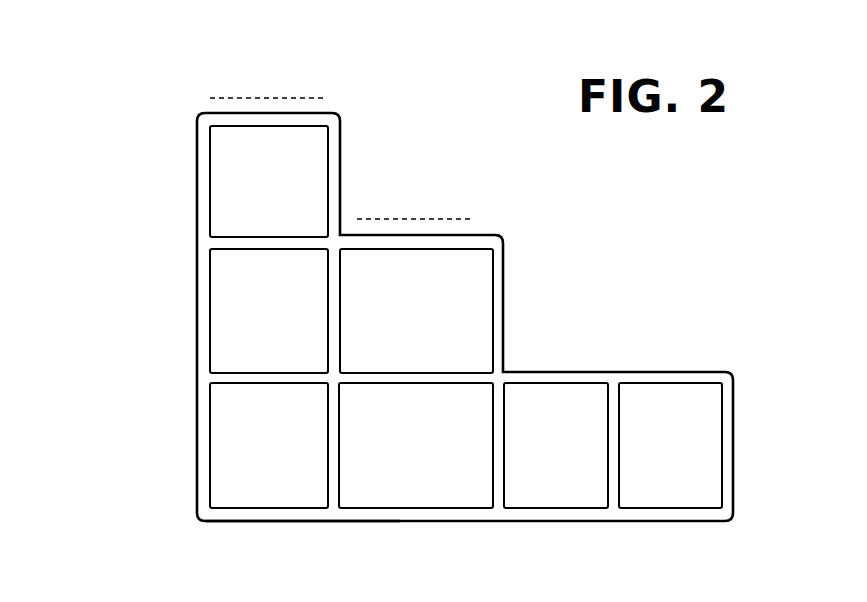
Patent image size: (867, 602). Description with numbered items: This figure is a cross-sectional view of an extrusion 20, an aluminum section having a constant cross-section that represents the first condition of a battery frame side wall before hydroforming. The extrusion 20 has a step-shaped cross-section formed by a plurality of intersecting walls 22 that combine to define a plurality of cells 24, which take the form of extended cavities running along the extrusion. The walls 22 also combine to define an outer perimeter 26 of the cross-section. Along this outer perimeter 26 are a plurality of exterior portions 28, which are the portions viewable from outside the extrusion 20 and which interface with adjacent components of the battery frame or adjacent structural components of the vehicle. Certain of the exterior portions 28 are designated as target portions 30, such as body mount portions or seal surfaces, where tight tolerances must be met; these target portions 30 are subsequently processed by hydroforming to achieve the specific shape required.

The extrusion 20 is at (133, 267).
The intersecting walls 22 is at (464, 354).
The cells 24 is at (258, 193).
The outer perimeter 26 is at (188, 531).
The exterior portions 28 is at (299, 114).
The target portions 30 is at (238, 97).